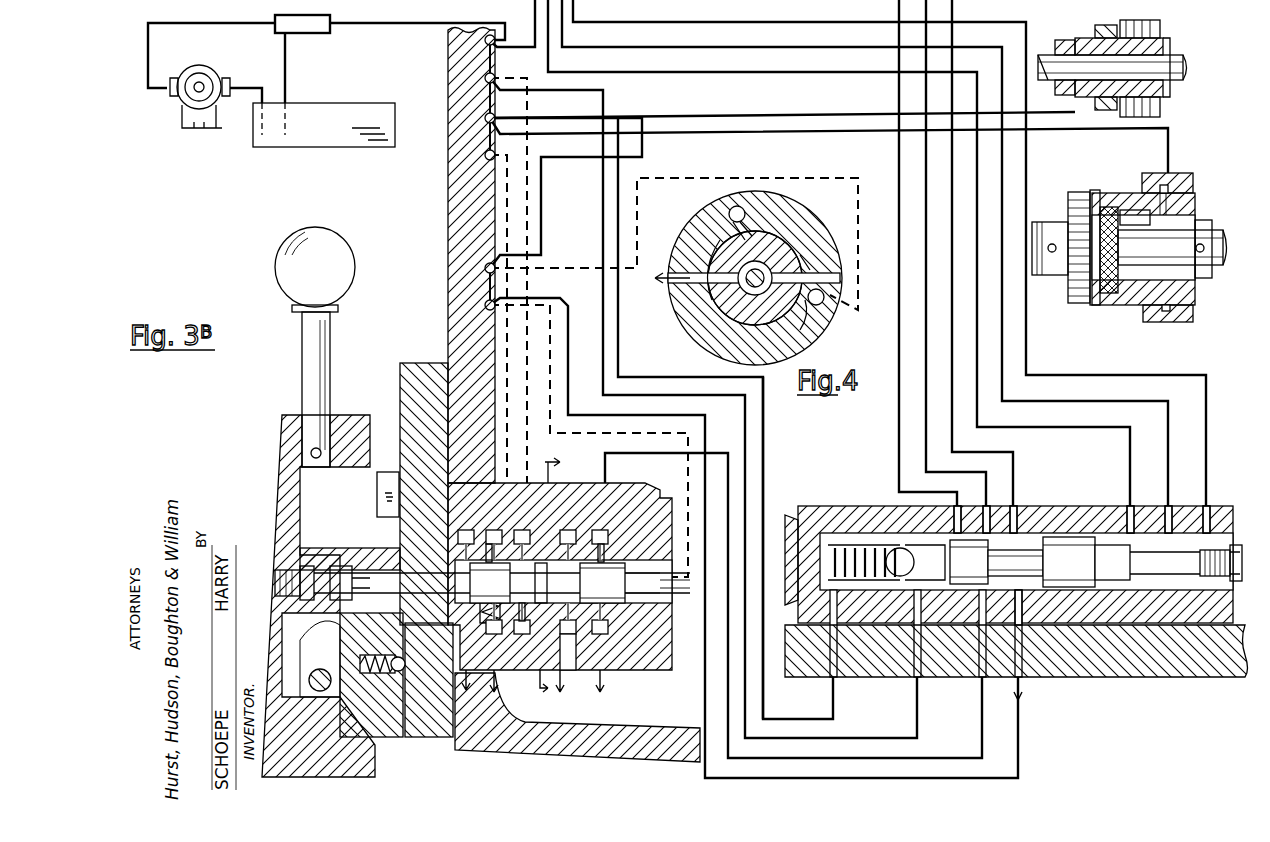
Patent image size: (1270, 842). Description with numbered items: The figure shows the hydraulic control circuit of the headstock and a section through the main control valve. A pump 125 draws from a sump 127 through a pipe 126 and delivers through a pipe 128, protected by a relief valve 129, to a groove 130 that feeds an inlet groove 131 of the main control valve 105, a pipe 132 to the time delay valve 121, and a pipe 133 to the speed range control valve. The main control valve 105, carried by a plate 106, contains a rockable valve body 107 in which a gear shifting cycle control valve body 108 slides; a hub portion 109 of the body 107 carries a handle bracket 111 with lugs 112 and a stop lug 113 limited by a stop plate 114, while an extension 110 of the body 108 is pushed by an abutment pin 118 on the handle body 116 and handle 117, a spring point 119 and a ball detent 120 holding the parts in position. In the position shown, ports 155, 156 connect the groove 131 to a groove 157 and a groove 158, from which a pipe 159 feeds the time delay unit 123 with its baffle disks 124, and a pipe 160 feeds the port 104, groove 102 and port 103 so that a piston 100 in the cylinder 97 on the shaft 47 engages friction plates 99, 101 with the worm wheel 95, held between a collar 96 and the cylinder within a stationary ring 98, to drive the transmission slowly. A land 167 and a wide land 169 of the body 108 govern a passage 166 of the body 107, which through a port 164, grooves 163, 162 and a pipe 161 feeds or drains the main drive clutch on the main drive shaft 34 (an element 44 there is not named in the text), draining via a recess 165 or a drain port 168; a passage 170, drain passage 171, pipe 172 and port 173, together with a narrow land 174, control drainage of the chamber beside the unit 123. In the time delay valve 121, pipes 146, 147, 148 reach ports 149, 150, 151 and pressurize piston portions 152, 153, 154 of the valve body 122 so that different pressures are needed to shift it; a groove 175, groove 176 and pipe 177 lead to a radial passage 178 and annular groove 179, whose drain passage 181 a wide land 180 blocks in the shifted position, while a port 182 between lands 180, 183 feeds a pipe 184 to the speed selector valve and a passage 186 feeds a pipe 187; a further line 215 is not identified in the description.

In FIG. 3B, the main drive shaft 34 is at (1180, 55).
In FIG. 3B, the clutch assembly 44 is at (1155, 22).
In FIG. 3B, the shaft 47 is at (1218, 270).
In FIG. 3B, the worm wheel 95 is at (1080, 303).
In FIG. 3B, the collar 96 is at (1050, 278).
In FIG. 3B, the cylinder 97 is at (1112, 295).
In FIG. 3B, the stationary ring 98 is at (1185, 318).
In FIG. 3B, the friction clutch plate material 99 is at (1095, 306).
In FIG. 3B, the piston 100 is at (1128, 256).
In FIG. 3B, the friction plate material 101 is at (1145, 216).
In FIG. 3B, the circular groove 102 is at (1165, 312).
In FIG. 3B, the port 103 is at (1175, 212).
In FIG. 3B, the port 104 is at (1165, 185).
In FIG. 3B, the main control valve 105 is at (618, 672).
In FIG. 3B, the plate 106 is at (415, 728).
In FIG. 3B, the rockable valve body 107 is at (640, 612).
In FIG. 4, the rockable valve body 107 is at (785, 235).
In FIG. 3B, the gear shifting cycle control valve body 108 is at (555, 583).
In FIG. 4, the gear shifting cycle control valve body 108 is at (780, 240).
In FIG. 3B, the hub-like portion 109 is at (420, 545).
In FIG. 3B, the extension 110 is at (345, 600).
In FIG. 3B, the handle bracket 111 is at (372, 725).
In FIG. 3B, the lug 112 is at (312, 668).
In FIG. 3B, the stop lug 113 is at (385, 530).
In FIG. 3B, the stop plate 114 is at (386, 472).
In FIG. 3B, the handle body 116 is at (282, 490).
In FIG. 3B, the handle 117 is at (318, 360).
In FIG. 3B, the abutment pin 118 is at (305, 600).
In FIG. 3B, the spring point 119 is at (482, 622).
In FIG. 3B, the spring-pressed ball detent 120 is at (398, 672).
In FIG. 3B, the time delay valve 121 is at (1040, 510).
In FIG. 3B, the valve body 122 is at (1069, 562).
In FIG. 3B, the time delay unit 123 is at (900, 540).
In FIG. 3B, the baffle disks 124 is at (910, 563).
In FIG. 3B, the pump 125 is at (215, 70).
In FIG. 3B, the pipe 126 is at (240, 120).
In FIG. 3B, the sump or reservoir 127 is at (324, 125).
In FIG. 3B, the pipe 128 is at (165, 30).
In FIG. 3B, the relief valve 129 is at (300, 28).
In FIG. 3B, the passage or milled groove 130 is at (486, 62).
In FIG. 3B, the inlet groove 131 is at (530, 460).
In FIG. 3B, the pipe 132 is at (603, 98).
In FIG. 3B, the pipe 133 is at (505, 50).
In FIG. 3B, the pipe 146 is at (1130, 450).
In FIG. 3B, the pipe 147 is at (1168, 435).
In FIG. 3B, the pipe 148 is at (1206, 420).
In FIG. 3B, the port 149 is at (1130, 515).
In FIG. 3B, the port 150 is at (1170, 512).
In FIG. 3B, the port 151 is at (1210, 512).
In FIG. 3B, the reduced portion 152 is at (1122, 582).
In FIG. 3B, the reduced portion 153 is at (1175, 580).
In FIG. 3B, the reduced portion 154 is at (1195, 568).
In FIG. 3B, the port 155 is at (492, 580).
In FIG. 3B, the port 156 is at (486, 552).
In FIG. 3B, the groove 157 is at (500, 430).
In FIG. 3B, the groove 158 is at (487, 148).
In FIG. 3B, the pipe 159 is at (618, 172).
In FIG. 3B, the pipe 160 is at (765, 135).
In FIG. 3B, the pipe 161 is at (765, 114).
In FIG. 3B, the groove 162 is at (486, 272).
In FIG. 3B, the groove 163 is at (572, 275).
In FIG. 4, the port 164 is at (825, 300).
In FIG. 4, the drain recess 165 is at (790, 330).
In FIG. 3B, the diametrically extending passage 166 is at (556, 488).
In FIG. 4, the diametrically extending passage 166 is at (730, 288).
In FIG. 3B, the land 167 is at (518, 609).
In FIG. 3B, the drain port 168 is at (533, 688).
In FIG. 4, the drain port 168 is at (672, 292).
In FIG. 3B, the wide land 169 is at (635, 583).
In FIG. 3B, the diametral passage 170 is at (600, 555).
In FIG. 3B, the drain passage 171 is at (600, 644).
In FIG. 3B, the pipe 172 is at (763, 490).
In FIG. 3B, the port 173 is at (920, 618).
In FIG. 3B, the narrow land 174 is at (660, 590).
In FIG. 3B, the groove 175 is at (688, 472).
In FIG. 3B, the groove 176 is at (488, 306).
In FIG. 3B, the pipe 177 is at (568, 352).
In FIG. 3B, the radial passage 178 is at (1022, 615).
In FIG. 3B, the annular groove 179 is at (1017, 561).
In FIG. 3B, the wide land 180 is at (1014, 520).
In FIG. 3B, the drain passage 181 is at (1025, 625).
In FIG. 3B, the port 182 is at (970, 562).
In FIG. 3B, the land 183 is at (925, 565).
In FIG. 3B, the pipe 184 is at (899, 420).
In FIG. 3B, the passage 186 is at (986, 520).
In FIG. 3B, the pipe 187 is at (926, 320).
In FIG. 3B, the pipe 215 is at (1005, 452).